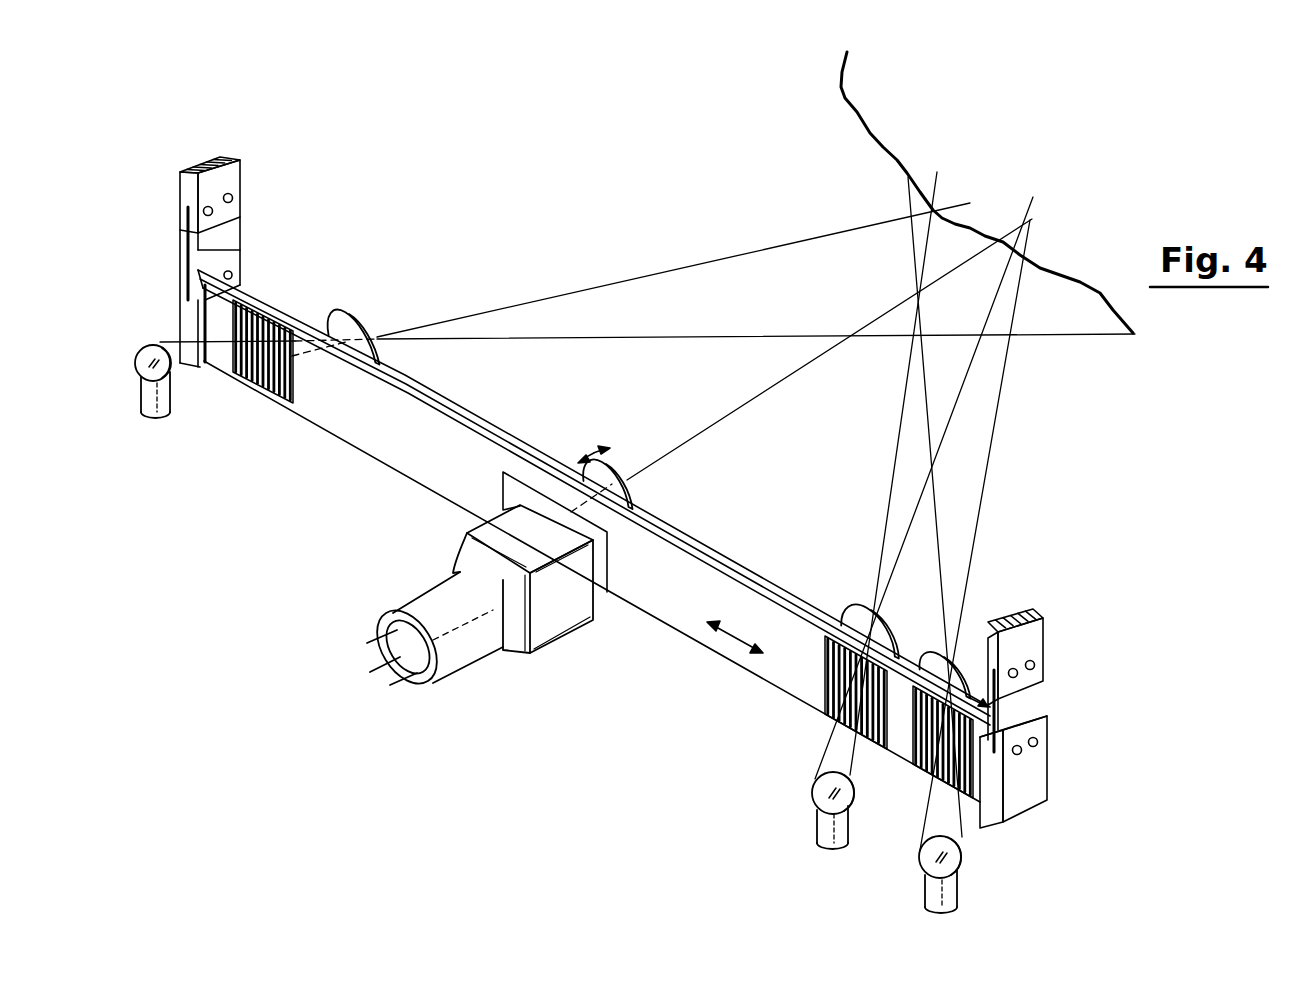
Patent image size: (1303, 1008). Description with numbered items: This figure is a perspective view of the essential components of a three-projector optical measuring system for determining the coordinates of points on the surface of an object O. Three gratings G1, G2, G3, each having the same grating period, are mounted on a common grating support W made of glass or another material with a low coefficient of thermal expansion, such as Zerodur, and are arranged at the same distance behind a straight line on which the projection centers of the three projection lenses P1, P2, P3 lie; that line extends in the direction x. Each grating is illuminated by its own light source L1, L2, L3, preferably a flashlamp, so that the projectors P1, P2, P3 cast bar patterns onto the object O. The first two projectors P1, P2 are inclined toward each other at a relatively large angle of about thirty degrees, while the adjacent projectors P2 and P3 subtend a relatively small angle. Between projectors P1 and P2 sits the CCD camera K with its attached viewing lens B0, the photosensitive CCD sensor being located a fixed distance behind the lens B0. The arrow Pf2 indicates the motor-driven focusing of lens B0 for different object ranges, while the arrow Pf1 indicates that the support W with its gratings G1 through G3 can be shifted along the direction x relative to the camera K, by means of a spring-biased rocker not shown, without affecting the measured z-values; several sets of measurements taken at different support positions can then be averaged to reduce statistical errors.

The grating support W is at (360, 423).
The first grating G1 is at (265, 393).
The second grating G2 is at (823, 697).
The third grating G3 is at (920, 767).
The first projector with projection lens P1 is at (355, 316).
The second projector with projection lens P2 is at (856, 613).
The third projector with projection lens P3 is at (958, 665).
The viewing lens B0 is at (627, 480).
The first light source L1 is at (140, 372).
The second light source L2 is at (822, 793).
The third light source L3 is at (957, 850).
The camera sensor K is at (556, 622).
The object O is at (873, 139).
The arrow indicating grating-support shift direction Pf1 is at (738, 641).
The arrow indicating lens focusing Pf2 is at (595, 457).
The x-direction straight line x is at (978, 689).